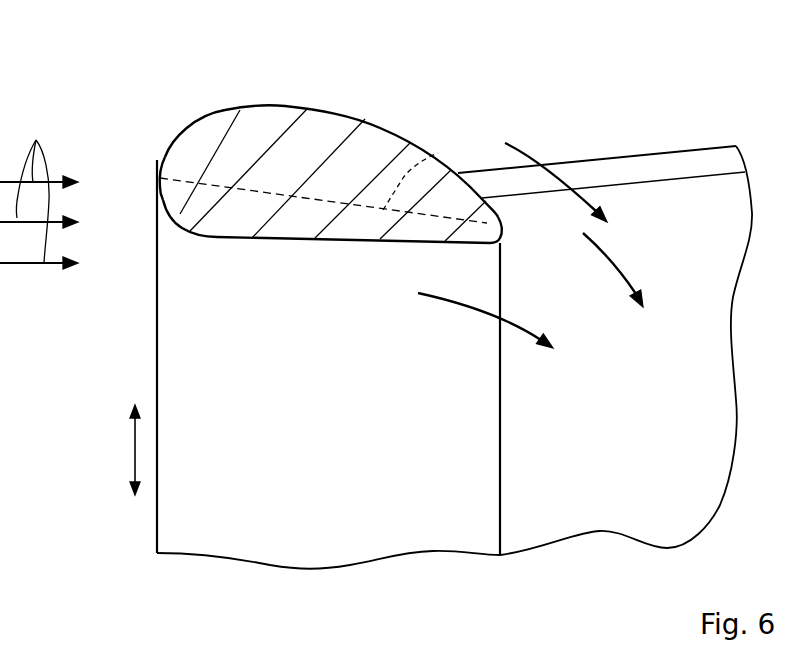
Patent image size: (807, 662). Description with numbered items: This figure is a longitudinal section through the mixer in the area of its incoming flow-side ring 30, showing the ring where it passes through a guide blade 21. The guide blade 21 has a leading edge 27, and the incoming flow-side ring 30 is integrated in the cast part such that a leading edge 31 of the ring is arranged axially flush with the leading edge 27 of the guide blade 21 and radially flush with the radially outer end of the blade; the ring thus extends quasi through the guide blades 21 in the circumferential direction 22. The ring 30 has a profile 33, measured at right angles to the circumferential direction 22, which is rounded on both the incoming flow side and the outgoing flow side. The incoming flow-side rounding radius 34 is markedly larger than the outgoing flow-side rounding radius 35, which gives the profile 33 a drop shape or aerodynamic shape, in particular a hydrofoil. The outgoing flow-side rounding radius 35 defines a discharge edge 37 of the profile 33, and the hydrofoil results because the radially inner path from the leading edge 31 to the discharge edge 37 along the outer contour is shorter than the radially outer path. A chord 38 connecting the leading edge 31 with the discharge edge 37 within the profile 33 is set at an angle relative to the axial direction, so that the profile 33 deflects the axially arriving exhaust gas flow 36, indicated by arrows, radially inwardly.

The guide blade 21 is at (613, 432).
The circumferential direction 22 is at (131, 448).
The leading edge 27 is at (156, 363).
The incoming flow-side ring 30 is at (331, 132).
The leading edge 31 is at (157, 171).
The profile 33 is at (275, 100).
The incoming flow-side rounding radius 34 is at (181, 216).
The outgoing flow-side rounding radius 35 is at (498, 244).
The exhaust gas flow 36 is at (650, 228).
The discharge edge 37 is at (503, 225).
The chord 38 is at (439, 152).